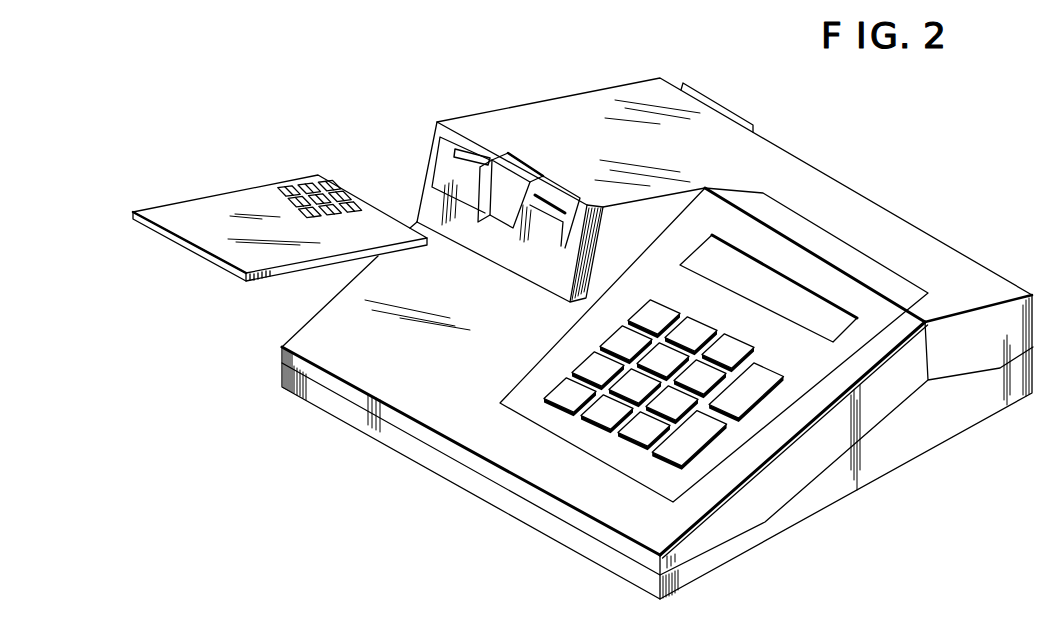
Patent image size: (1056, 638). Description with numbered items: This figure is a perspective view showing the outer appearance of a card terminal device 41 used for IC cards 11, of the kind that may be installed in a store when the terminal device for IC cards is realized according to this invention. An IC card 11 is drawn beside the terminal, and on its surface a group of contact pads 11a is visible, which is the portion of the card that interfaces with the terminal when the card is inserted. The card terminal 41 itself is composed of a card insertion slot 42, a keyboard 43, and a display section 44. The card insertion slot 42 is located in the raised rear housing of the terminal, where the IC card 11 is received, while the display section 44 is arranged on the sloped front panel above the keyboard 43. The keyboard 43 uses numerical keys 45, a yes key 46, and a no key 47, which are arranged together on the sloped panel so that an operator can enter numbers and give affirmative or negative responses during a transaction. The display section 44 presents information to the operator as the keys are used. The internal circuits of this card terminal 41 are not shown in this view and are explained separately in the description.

The IC card 11 is at (207, 205).
The contact pads of card 11a is at (293, 190).
The card terminal device 41 is at (633, 83).
The card insertion slot 42 is at (457, 155).
The keyboard 43 is at (628, 449).
The display section 44 is at (730, 268).
The numerical keys 45 is at (587, 368).
The yes key 46 is at (677, 453).
The no key 47 is at (770, 375).